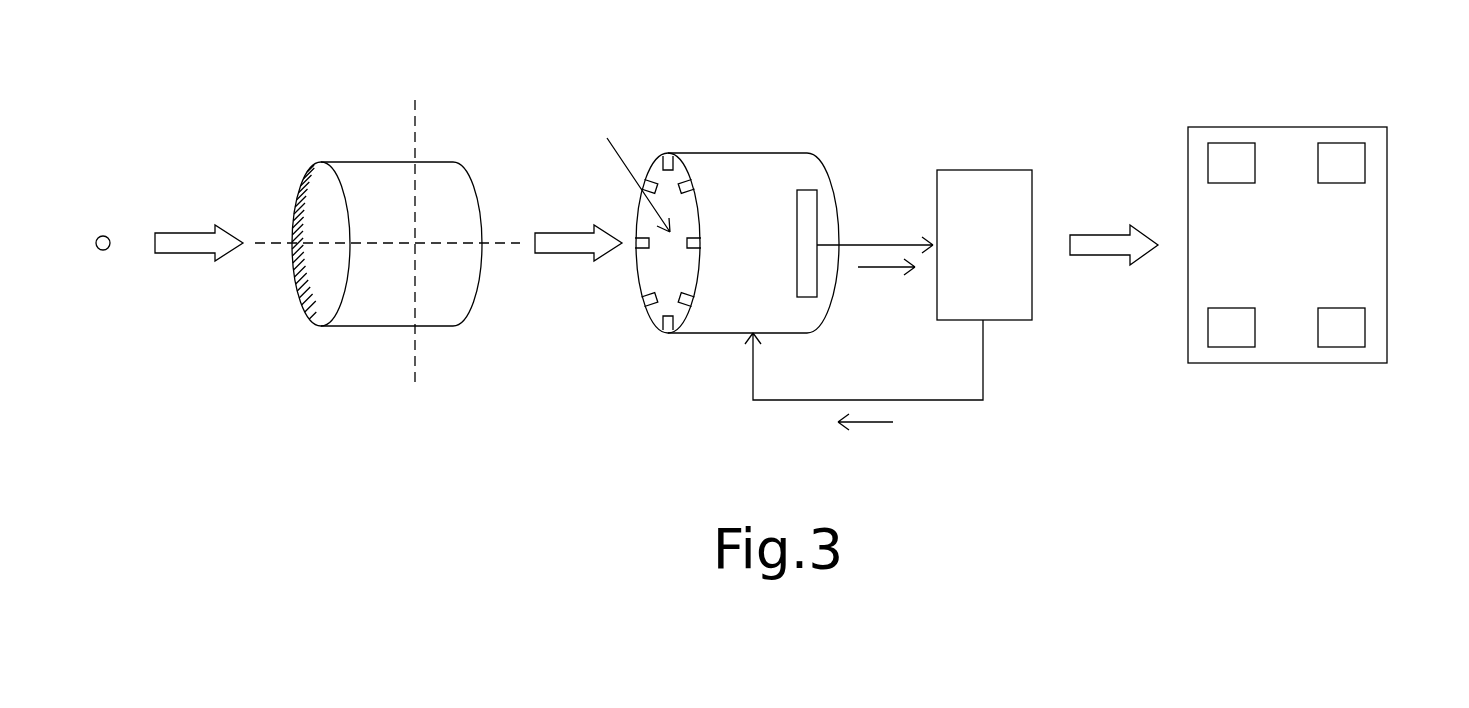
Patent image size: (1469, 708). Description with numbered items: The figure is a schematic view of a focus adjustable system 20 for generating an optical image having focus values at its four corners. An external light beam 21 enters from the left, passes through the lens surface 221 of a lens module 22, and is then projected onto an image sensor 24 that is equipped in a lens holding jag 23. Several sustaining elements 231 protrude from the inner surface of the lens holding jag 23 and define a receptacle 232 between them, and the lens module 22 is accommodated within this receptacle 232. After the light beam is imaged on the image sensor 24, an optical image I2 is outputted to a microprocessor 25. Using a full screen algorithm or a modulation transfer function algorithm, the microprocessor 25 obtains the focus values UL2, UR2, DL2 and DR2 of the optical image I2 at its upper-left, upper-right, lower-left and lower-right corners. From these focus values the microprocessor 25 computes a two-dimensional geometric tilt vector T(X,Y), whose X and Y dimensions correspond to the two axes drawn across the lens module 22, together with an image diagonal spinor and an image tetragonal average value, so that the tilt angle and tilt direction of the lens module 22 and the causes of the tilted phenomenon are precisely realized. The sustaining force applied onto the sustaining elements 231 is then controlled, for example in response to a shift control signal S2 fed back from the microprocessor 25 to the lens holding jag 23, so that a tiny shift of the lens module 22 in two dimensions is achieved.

The focus adjustable system 20 is at (695, 38).
The external light beam 21 is at (108, 236).
The lens module 22 is at (372, 170).
The lens surface 221 is at (305, 278).
The lens holding jag 23 is at (728, 165).
The sustaining elements 231 is at (693, 270).
The receptacle 232 is at (625, 169).
The image sensor 24 is at (803, 203).
The microprocessor 25 is at (968, 183).
The X dimension of the geometric tilt vector X is at (493, 243).
The Y dimension of the geometric tilt vector Y is at (416, 135).
The optical image I2 is at (885, 267).
The shift control signal S2 is at (870, 422).
The upper-left corner focus value UL2 is at (1233, 155).
The upper-right corner focus value UR2 is at (1340, 155).
The lower-left corner focus value DL2 is at (1223, 328).
The lower-right corner focus value DR2 is at (1345, 328).